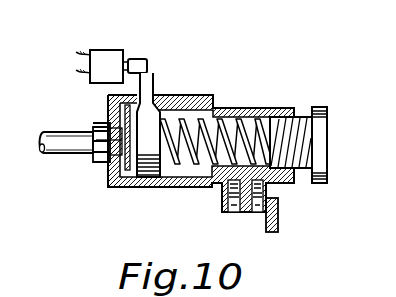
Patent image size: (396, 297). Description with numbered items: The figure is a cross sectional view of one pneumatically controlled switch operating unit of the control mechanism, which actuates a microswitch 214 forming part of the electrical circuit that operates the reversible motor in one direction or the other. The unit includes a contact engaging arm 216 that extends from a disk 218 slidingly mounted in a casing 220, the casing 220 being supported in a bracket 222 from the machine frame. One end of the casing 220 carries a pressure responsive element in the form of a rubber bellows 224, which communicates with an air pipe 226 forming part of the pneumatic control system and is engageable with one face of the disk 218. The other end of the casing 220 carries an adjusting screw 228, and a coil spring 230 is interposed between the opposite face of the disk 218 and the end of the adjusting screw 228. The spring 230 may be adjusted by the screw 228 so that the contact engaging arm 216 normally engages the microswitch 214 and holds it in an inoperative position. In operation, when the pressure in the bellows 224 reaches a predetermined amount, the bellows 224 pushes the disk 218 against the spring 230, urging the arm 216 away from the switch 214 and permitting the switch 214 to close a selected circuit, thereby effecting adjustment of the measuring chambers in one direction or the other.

The switch 214 is at (108, 49).
The contact engaging arm 216 is at (147, 59).
The disk 218 is at (150, 110).
The casing 220 is at (234, 111).
The bracket 222 is at (278, 226).
The rubber bellows 224 is at (112, 183).
The air pipe 226 is at (70, 132).
The adjusting screw 228 is at (316, 106).
The coil spring 230 is at (184, 168).